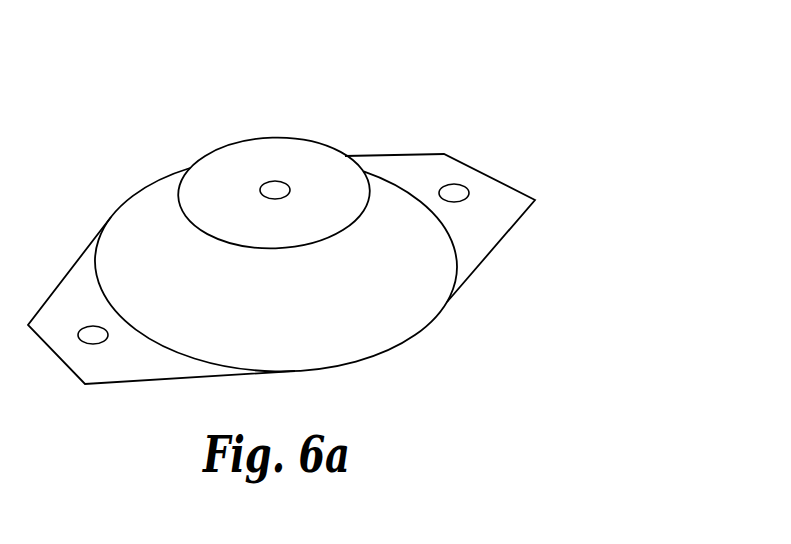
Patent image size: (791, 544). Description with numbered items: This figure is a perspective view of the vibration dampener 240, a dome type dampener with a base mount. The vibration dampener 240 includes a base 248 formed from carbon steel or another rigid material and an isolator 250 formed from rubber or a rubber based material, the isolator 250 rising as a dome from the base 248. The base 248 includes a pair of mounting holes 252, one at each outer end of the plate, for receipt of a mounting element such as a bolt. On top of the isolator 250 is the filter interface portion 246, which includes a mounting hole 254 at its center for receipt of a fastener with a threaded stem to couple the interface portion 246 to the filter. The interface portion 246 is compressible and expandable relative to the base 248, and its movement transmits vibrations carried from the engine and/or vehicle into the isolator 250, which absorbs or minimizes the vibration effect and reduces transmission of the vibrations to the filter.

The vibration dampener 240 is at (333, 239).
The filter interface portion 246 is at (232, 158).
The base 248 is at (143, 382).
The isolator 250 is at (152, 210).
The mounting holes 252 is at (90, 334).
The mounting hole 254 is at (275, 188).